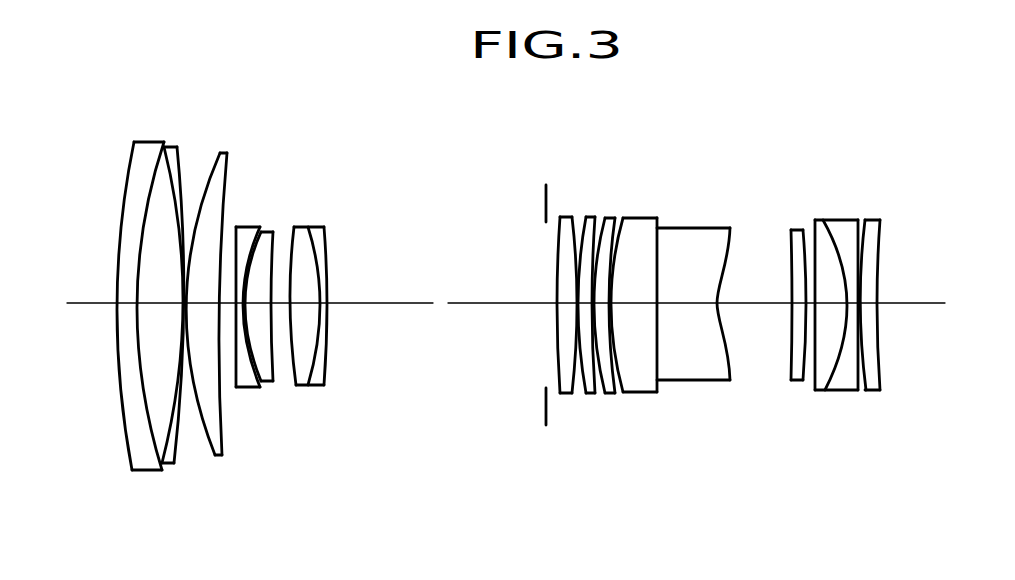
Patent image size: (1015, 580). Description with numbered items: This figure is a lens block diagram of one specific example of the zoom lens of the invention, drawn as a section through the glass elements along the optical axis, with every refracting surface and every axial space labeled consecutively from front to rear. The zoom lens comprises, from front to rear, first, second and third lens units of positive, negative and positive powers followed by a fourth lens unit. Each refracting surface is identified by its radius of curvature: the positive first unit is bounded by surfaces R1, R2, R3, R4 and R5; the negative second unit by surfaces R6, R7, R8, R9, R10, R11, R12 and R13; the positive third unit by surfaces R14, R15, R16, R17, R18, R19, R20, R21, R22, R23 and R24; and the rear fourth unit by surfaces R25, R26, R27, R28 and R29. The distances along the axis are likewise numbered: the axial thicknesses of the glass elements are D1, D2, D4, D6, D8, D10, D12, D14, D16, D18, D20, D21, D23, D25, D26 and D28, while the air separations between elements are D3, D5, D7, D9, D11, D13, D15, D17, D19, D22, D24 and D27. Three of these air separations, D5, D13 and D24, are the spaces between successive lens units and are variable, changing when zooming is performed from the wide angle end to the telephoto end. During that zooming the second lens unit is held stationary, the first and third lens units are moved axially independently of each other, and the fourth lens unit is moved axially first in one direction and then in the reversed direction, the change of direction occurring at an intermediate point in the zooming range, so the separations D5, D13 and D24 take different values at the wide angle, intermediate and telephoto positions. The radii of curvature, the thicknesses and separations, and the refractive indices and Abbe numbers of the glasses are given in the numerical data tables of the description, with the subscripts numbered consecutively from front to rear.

The radius of curvature of first lens surface R1 is at (123, 203).
The radius of curvature of second lens surface R2 is at (145, 205).
The radius of curvature of third lens surface R3 is at (165, 146).
The radius of curvature of fourth lens surface R4 is at (177, 180).
The radius of curvature of fifth lens surface R5 is at (189, 196).
The radius of curvature of sixth lens surface R6 is at (223, 198).
The radius of curvature of seventh lens surface R7 is at (236, 227).
The radius of curvature of eighth lens surface R8 is at (253, 253).
The radius of curvature of ninth lens surface R9 is at (271, 253).
The radius of curvature of tenth lens surface R10 is at (274, 232).
The radius of curvature of eleventh lens surface R11 is at (307, 252).
The radius of curvature of twelfth lens surface R12 is at (307, 227).
The radius of curvature of thirteenth lens surface R13 is at (325, 253).
The radius of curvature of fourteenth lens surface R14 is at (557, 265).
The radius of curvature of fifteenth lens surface R15 is at (572, 217).
The radius of curvature of sixteenth lens surface R16 is at (586, 217).
The radius of curvature of seventeenth lens surface R17 is at (595, 217).
The radius of curvature of eighteenth lens surface R18 is at (606, 218).
The radius of curvature of nineteenth lens surface R19 is at (616, 218).
The radius of curvature of twentieth lens surface R20 is at (637, 247).
The radius of curvature of twenty-first lens surface R21 is at (657, 243).
The radius of curvature of twenty-second lens surface R22 is at (716, 228).
The radius of curvature of twenty-third lens surface R23 is at (791, 262).
The radius of curvature of twenty-fourth lens surface R24 is at (792, 230).
The radius of curvature of twenty-fifth lens surface R25 is at (815, 247).
The radius of curvature of twenty-sixth lens surface R26 is at (836, 220).
The radius of curvature of twenty-seventh lens surface R27 is at (857, 252).
The radius of curvature of twenty-eighth lens surface R28 is at (865, 220).
The radius of curvature of twenty-ninth lens surface R29 is at (878, 247).
The axial thickness D1 is at (125, 398).
The axial thickness D2 is at (152, 392).
The air separation D3 is at (174, 400).
The axial thickness D4 is at (192, 400).
The variable air separation D5 is at (213, 425).
The axial thickness D6 is at (229, 420).
The air separation D7 is at (241, 392).
The axial thickness D8 is at (250, 393).
The air separation D9 is at (266, 390).
The axial thickness D10 is at (283, 395).
The air separation D11 is at (303, 392).
The axial thickness D12 is at (318, 392).
The variable air separation D13 is at (398, 310).
The axial thickness D14 is at (557, 340).
The air separation D15 is at (565, 393).
The axial thickness D16 is at (580, 393).
The air separation D17 is at (596, 393).
The axial thickness D18 is at (605, 393).
The air separation D19 is at (626, 392).
The axial thickness D20 is at (663, 388).
The axial thickness D21 is at (690, 382).
The air separation D22 is at (759, 306).
The axial thickness D23 is at (793, 383).
The variable air separation D24 is at (806, 391).
The axial thickness D25 is at (827, 392).
The axial thickness D26 is at (850, 392).
The air separation D27 is at (862, 392).
The axial thickness D28 is at (877, 335).